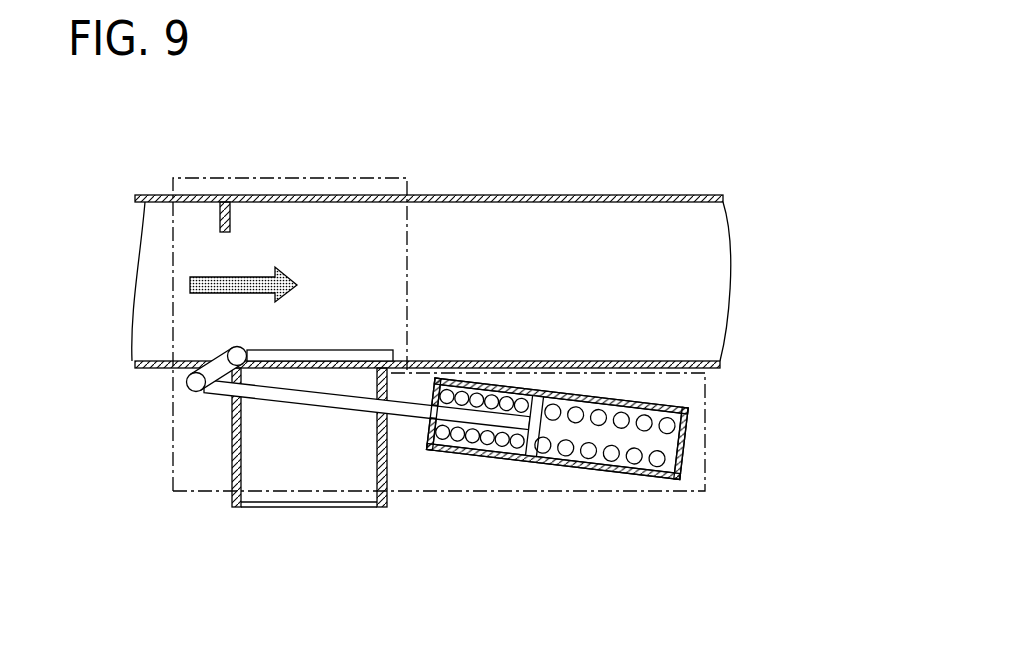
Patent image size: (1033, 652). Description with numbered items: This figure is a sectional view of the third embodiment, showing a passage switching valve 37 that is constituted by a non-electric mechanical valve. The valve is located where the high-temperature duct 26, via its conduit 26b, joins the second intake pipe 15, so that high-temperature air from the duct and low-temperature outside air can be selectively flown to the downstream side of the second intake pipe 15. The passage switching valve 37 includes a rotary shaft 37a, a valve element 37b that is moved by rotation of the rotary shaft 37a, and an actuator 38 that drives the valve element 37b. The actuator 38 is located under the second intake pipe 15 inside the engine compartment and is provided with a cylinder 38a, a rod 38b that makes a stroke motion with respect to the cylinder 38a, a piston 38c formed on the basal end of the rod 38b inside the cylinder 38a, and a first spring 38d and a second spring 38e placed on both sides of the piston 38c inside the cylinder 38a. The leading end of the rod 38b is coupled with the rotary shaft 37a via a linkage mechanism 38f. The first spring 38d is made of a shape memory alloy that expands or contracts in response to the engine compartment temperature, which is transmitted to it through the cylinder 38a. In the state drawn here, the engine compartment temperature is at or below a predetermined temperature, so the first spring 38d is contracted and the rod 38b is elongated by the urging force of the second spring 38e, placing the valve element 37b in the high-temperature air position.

The second intake pipe 15 is at (583, 197).
The high-temperature duct 26 is at (148, 197).
The conduit 26b is at (198, 197).
The passage switching valve 37 is at (298, 178).
The rotary shaft 37a is at (238, 366).
The valve element 37b is at (363, 350).
The actuator 38 is at (555, 464).
The cylinder 38a is at (555, 454).
The rod 38b is at (413, 412).
The piston 38c is at (535, 426).
The first spring 38d is at (482, 419).
The second spring 38e is at (573, 465).
The linkage mechanism 38f is at (216, 385).